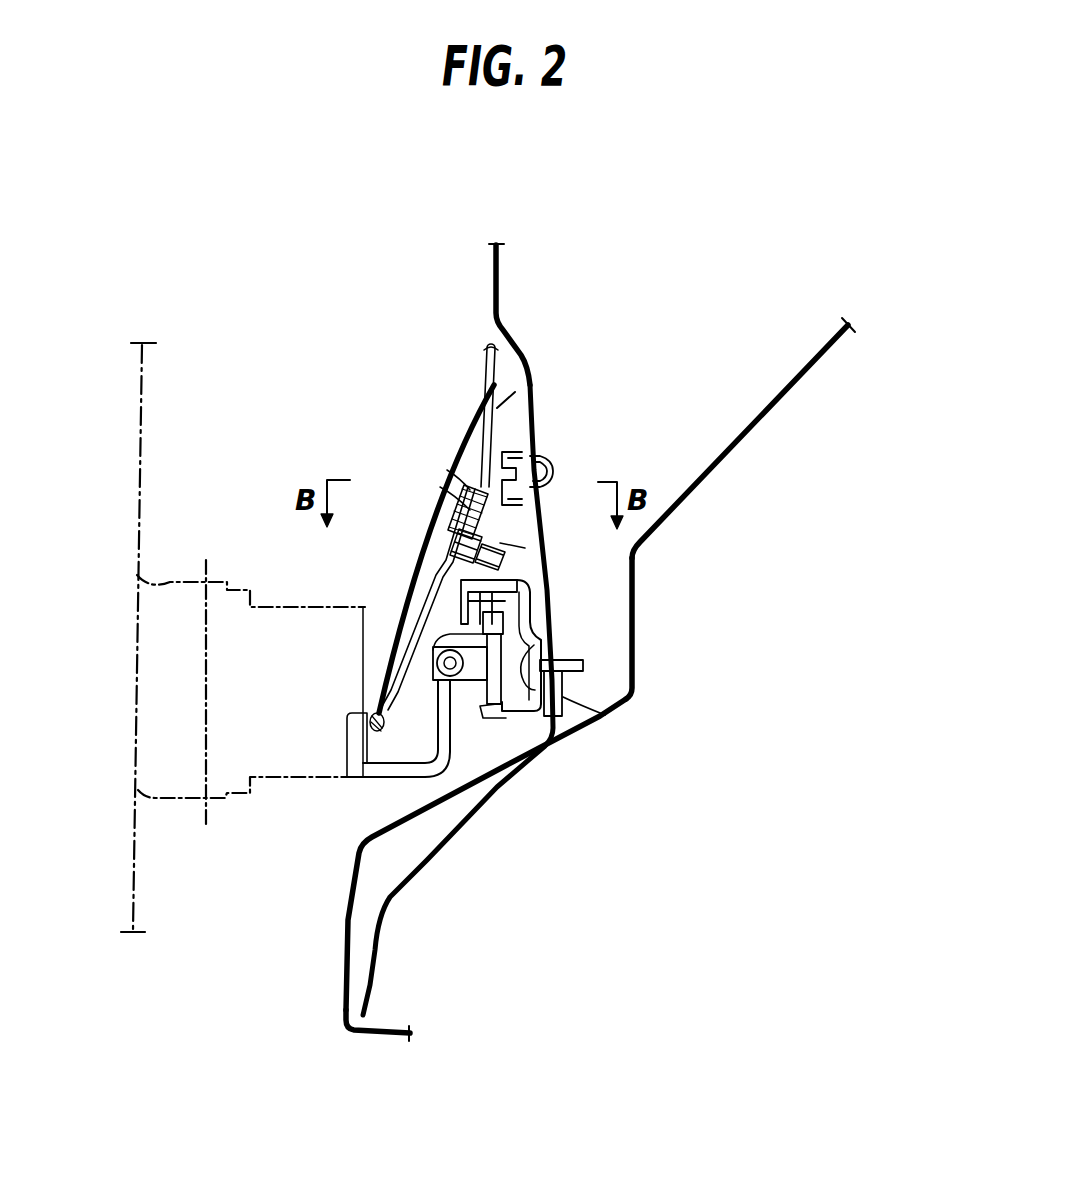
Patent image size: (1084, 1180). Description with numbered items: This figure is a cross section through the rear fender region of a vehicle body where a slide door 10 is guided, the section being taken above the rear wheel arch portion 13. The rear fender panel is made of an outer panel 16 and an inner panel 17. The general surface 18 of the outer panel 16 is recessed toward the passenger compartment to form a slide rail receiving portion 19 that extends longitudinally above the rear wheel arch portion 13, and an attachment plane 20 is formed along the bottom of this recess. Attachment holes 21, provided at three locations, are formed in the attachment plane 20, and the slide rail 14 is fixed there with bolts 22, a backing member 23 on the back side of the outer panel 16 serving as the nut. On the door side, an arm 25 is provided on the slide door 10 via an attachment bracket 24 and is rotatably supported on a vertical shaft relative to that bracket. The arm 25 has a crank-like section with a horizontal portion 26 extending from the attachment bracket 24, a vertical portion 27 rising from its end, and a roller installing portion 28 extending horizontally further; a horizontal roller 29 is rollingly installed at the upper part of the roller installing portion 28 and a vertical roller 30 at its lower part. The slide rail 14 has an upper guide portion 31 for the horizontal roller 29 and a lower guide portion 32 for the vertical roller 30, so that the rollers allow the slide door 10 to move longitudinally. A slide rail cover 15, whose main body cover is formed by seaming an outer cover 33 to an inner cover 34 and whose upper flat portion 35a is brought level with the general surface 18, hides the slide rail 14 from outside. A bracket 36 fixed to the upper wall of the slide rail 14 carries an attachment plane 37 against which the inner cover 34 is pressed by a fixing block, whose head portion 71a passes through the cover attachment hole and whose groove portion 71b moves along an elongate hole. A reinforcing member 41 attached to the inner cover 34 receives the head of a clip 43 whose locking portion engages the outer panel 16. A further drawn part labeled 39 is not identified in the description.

The slide door 10 is at (142, 453).
The rear wheel arch portion 13 is at (387, 1037).
The slide rail 14 is at (550, 580).
The slide rail cover 15 is at (448, 430).
The outer panel 16 is at (500, 264).
The inner panel 17 is at (787, 397).
The general surface 18 is at (490, 300).
The slide rail receiving portion 19 is at (510, 383).
The attachment plane 20 is at (556, 600).
The attachment holes 21 is at (568, 662).
The bolts 22 is at (578, 672).
The backing member 23 is at (605, 715).
The attachment bracket 24 is at (137, 575).
The arm 25 is at (441, 771).
The horizontal portion 26 is at (397, 777).
The vertical portion 27 is at (448, 732).
The roller installing portion 28 is at (386, 654).
The horizontal roller 29 is at (463, 610).
The vertical roller 30 is at (490, 722).
The guide portion 31 is at (512, 570).
The guide portion 32 is at (556, 730).
The outer cover 33 is at (455, 583).
The inner cover 34 is at (497, 410).
The upper flat portion 35a is at (484, 350).
The bracket 36 is at (505, 547).
The attachment plane 37 is at (480, 510).
The clamp 39 is at (452, 530).
The reinforcing member 41 is at (530, 458).
The clip 43 is at (548, 464).
The head portion 71a is at (440, 487).
The groove portion 71b is at (447, 470).